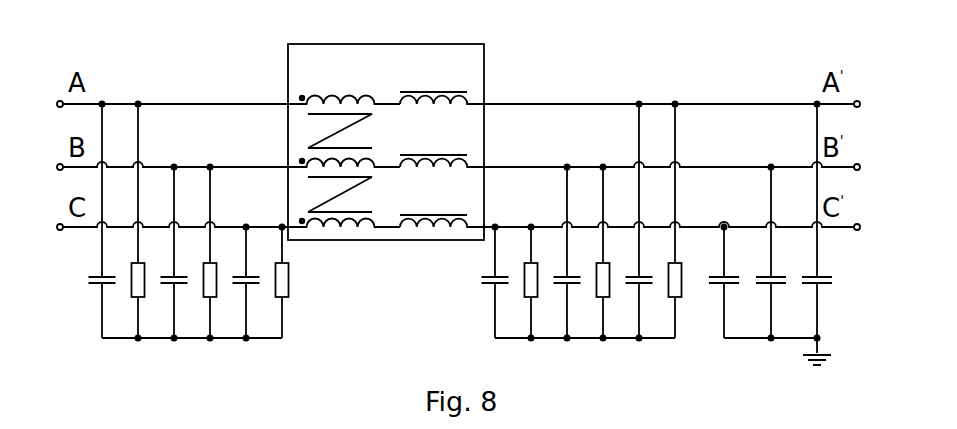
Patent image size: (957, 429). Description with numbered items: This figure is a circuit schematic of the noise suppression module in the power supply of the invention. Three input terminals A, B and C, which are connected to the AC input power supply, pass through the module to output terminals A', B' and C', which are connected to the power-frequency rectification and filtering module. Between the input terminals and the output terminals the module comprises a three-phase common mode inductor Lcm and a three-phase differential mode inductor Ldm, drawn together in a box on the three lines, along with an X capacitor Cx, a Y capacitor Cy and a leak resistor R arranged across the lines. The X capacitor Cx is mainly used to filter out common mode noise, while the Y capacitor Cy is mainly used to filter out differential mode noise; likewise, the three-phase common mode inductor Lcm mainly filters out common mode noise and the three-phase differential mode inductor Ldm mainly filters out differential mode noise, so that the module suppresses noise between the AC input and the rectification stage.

The X capacitor Cx is at (92, 221).
The leak resistor R is at (296, 282).
The Y capacitor Cy is at (824, 221).
The three-phase common mode inductor Lcm is at (344, 139).
The three-phase differential mode inductor Ldm is at (442, 137).